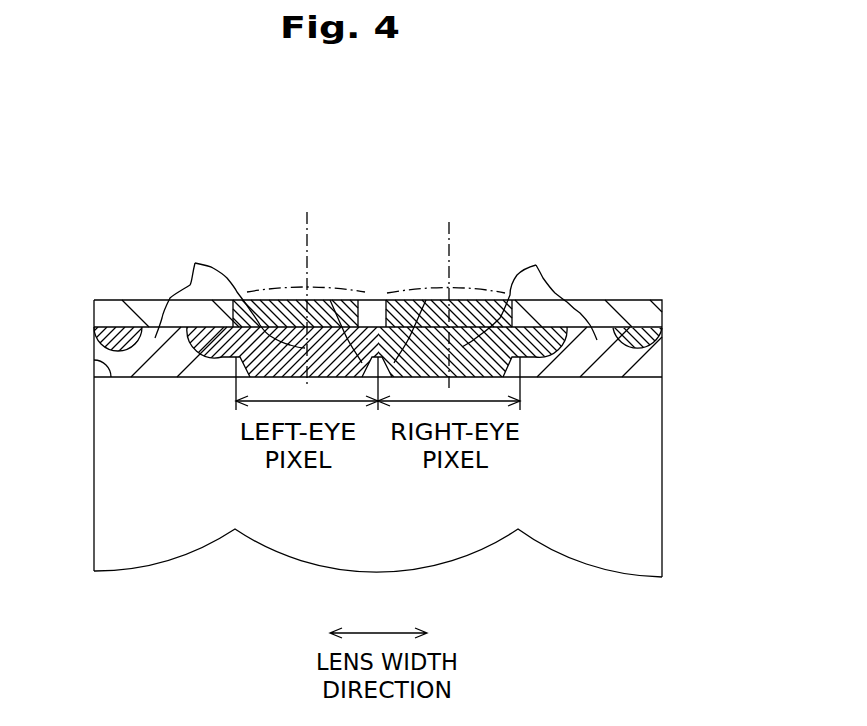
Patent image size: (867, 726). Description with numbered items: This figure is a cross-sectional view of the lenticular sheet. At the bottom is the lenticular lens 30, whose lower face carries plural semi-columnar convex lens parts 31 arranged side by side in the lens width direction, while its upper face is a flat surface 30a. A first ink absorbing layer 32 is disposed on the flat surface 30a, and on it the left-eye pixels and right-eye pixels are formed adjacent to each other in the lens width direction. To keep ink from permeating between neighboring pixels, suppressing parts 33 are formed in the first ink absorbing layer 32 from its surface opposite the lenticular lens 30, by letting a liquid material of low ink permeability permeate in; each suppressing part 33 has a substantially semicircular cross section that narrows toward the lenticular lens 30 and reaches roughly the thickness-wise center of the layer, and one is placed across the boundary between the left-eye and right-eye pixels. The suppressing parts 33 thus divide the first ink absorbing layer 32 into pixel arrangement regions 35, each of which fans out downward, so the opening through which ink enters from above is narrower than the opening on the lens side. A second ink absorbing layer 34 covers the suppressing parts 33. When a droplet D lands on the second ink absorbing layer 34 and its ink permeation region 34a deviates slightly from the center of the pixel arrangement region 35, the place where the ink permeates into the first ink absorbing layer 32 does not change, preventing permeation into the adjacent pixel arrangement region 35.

The lenticular lens 30 is at (647, 445).
The flat surface 30a is at (92, 368).
The convex lens parts 31 is at (478, 536).
The first ink absorbing layer 32 is at (650, 370).
The suppressing part 33 is at (376, 327).
The second ink absorbing layer 34 is at (653, 322).
The ink permeation region 34a is at (330, 300).
The pixel arrangement regions 35 is at (376, 292).
The droplet D is at (467, 287).